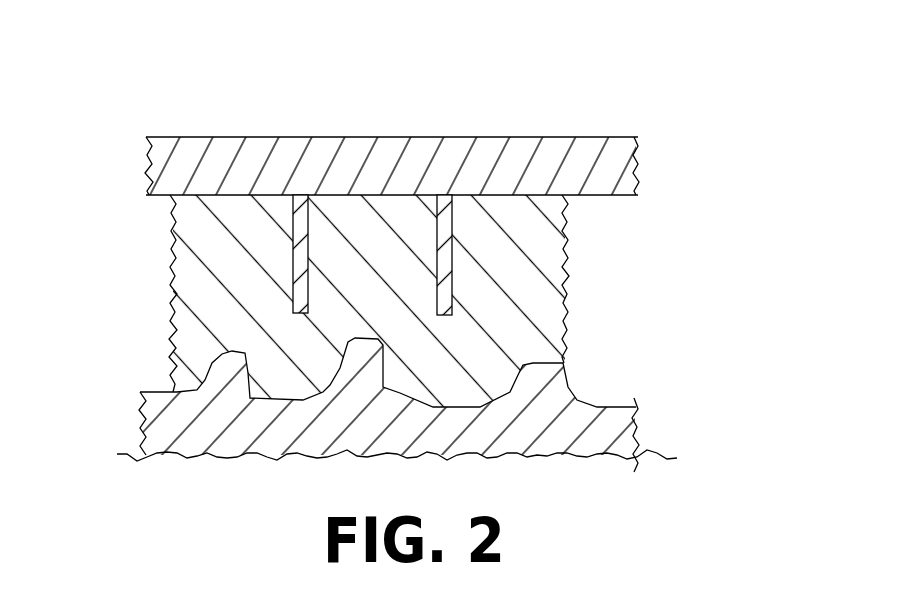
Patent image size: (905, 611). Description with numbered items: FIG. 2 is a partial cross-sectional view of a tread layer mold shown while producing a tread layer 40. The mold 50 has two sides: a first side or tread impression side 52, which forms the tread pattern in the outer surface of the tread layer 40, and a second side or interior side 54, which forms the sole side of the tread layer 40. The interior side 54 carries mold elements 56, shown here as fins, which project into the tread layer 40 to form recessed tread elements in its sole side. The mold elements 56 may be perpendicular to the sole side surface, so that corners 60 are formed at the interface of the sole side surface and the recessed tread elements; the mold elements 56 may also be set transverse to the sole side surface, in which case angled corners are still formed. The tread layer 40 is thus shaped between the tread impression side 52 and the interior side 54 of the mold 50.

The mold 50 is at (394, 258).
The interior side 54 is at (190, 171).
The tread layer 40 is at (217, 293).
The tread impression side 52 is at (185, 420).
The mold elements 56 is at (453, 277).
The corners 60 is at (482, 183).